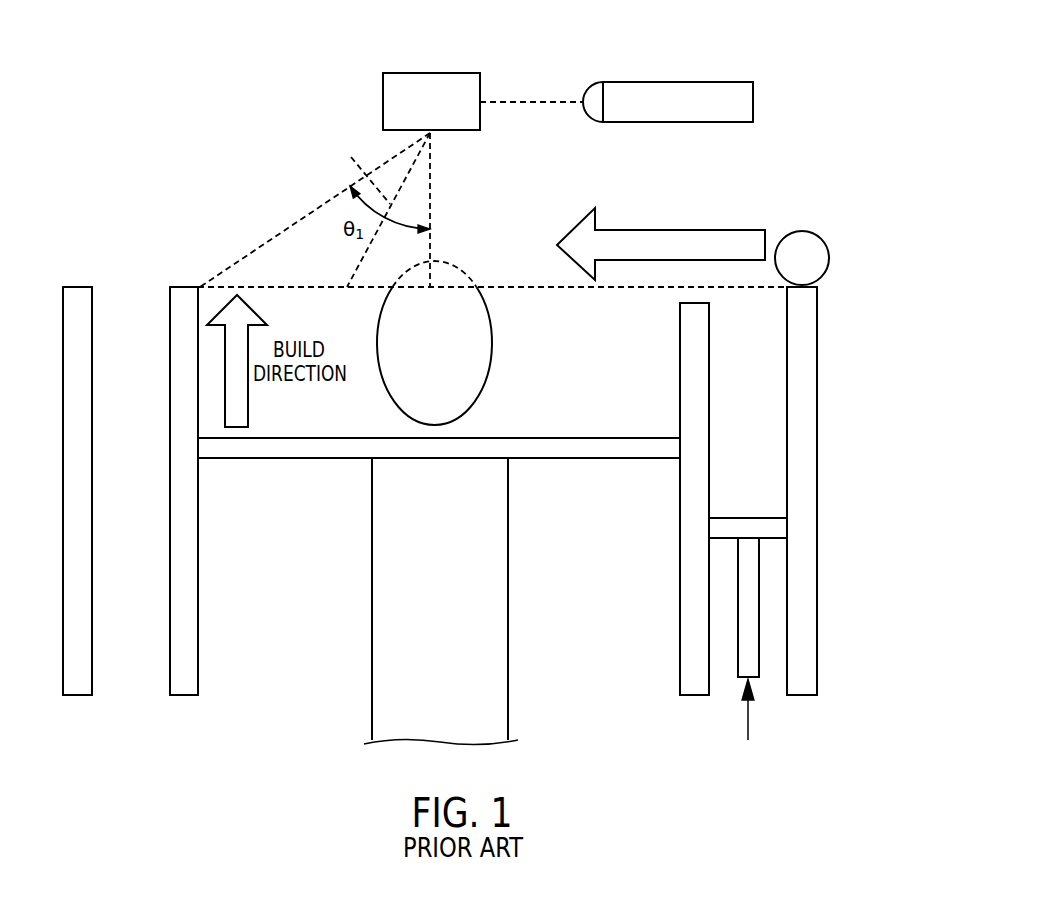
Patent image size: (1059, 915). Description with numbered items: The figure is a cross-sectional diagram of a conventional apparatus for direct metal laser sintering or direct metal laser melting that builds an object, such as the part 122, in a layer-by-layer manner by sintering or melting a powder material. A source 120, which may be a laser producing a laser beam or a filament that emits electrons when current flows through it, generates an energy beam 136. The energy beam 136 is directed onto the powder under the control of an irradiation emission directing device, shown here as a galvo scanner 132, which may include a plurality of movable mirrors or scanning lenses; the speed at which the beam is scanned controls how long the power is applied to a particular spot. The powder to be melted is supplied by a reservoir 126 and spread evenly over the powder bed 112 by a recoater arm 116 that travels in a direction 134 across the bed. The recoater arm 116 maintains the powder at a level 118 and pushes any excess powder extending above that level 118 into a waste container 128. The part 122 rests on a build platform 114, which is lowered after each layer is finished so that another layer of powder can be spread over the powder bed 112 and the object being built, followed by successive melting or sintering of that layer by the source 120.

The powder bed 112 is at (530, 305).
The build platform 114 is at (633, 438).
The recoater arm 116 is at (800, 231).
The powder level 118 is at (323, 284).
The source 120 is at (652, 82).
The part 122 is at (378, 342).
The reservoir 126 is at (770, 370).
The waste container 128 is at (155, 588).
The galvo scanner 132 is at (425, 72).
The direction 134 is at (572, 233).
The energy beam 136 is at (365, 168).